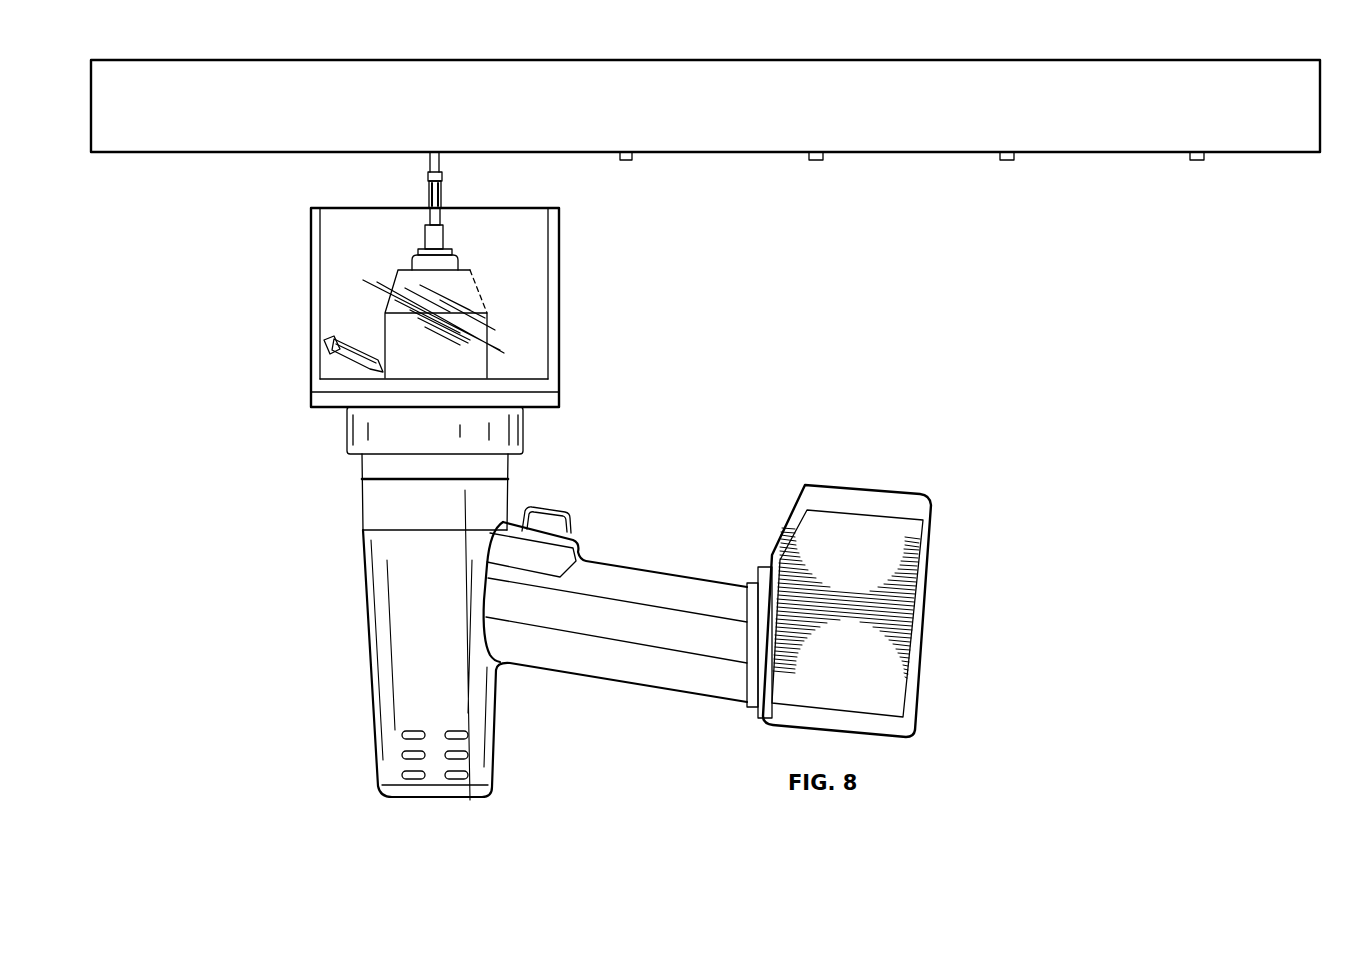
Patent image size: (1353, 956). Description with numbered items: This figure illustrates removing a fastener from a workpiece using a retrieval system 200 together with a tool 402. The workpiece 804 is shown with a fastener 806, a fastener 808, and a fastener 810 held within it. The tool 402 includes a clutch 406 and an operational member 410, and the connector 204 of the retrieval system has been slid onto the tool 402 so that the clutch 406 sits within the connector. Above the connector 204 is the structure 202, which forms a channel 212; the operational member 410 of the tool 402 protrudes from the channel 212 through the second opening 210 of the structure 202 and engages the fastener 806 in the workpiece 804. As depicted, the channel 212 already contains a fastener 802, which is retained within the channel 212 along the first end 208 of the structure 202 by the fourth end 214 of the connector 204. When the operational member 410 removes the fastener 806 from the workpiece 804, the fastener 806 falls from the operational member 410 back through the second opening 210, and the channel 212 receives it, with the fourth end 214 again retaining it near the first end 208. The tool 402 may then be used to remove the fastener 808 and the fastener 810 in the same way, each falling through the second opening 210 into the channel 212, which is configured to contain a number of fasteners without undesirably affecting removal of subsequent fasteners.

The retrieval system 200 is at (290, 300).
The structure 202 is at (562, 300).
The connector 204 is at (346, 427).
The first end 208 is at (535, 396).
The second opening 210 is at (330, 207).
The channel 212 is at (529, 224).
The fourth end 214 is at (325, 391).
The tool 402 is at (634, 708).
The clutch 406 is at (361, 470).
The operational member 410 is at (428, 196).
The fastener 802 is at (358, 345).
The workpiece 804 is at (722, 117).
The fastener 806 is at (440, 168).
The fastener 808 is at (632, 157).
The fastener 810 is at (823, 157).